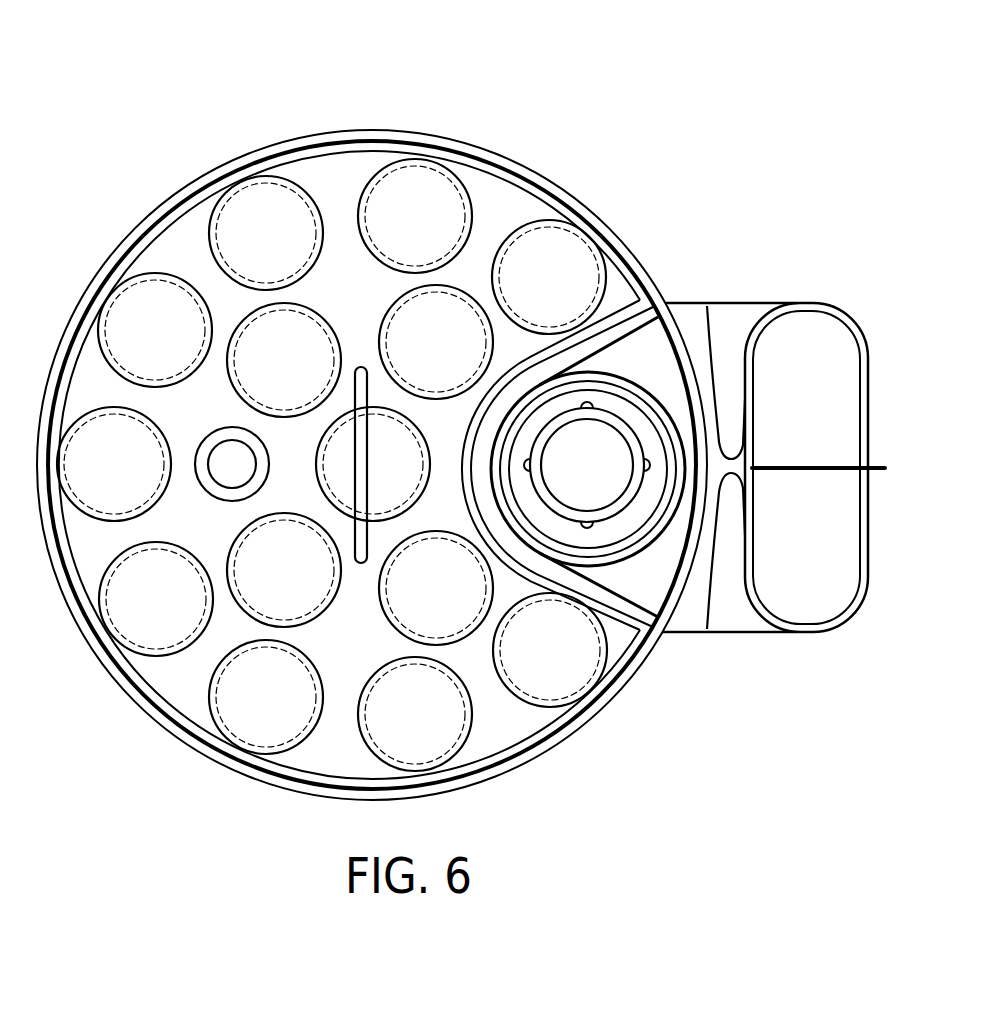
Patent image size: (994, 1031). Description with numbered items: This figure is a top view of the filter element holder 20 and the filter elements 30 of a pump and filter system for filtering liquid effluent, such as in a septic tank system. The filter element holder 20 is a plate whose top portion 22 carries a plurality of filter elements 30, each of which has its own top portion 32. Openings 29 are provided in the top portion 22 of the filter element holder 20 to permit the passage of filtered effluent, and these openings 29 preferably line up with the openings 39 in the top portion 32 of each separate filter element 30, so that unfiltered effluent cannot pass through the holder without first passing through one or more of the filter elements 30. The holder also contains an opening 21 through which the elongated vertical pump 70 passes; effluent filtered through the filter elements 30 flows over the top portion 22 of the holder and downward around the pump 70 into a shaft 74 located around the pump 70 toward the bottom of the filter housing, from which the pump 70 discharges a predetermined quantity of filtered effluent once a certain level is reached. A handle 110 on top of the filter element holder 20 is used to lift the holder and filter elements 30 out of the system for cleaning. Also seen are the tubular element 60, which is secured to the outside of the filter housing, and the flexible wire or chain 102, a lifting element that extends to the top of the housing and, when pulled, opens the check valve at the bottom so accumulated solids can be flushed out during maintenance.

The filter element holder 20 is at (312, 126).
The opening 21 is at (648, 350).
The top portion 22 is at (505, 205).
The openings 29 is at (410, 163).
The filter elements 30 is at (263, 182).
The top portion 32 is at (414, 210).
The openings 39 is at (133, 325).
The tubular element 60 is at (857, 323).
The pump 70 is at (613, 508).
The shaft 74 is at (667, 393).
The flexible wire or chain 102 is at (850, 474).
The handle 110 is at (362, 390).